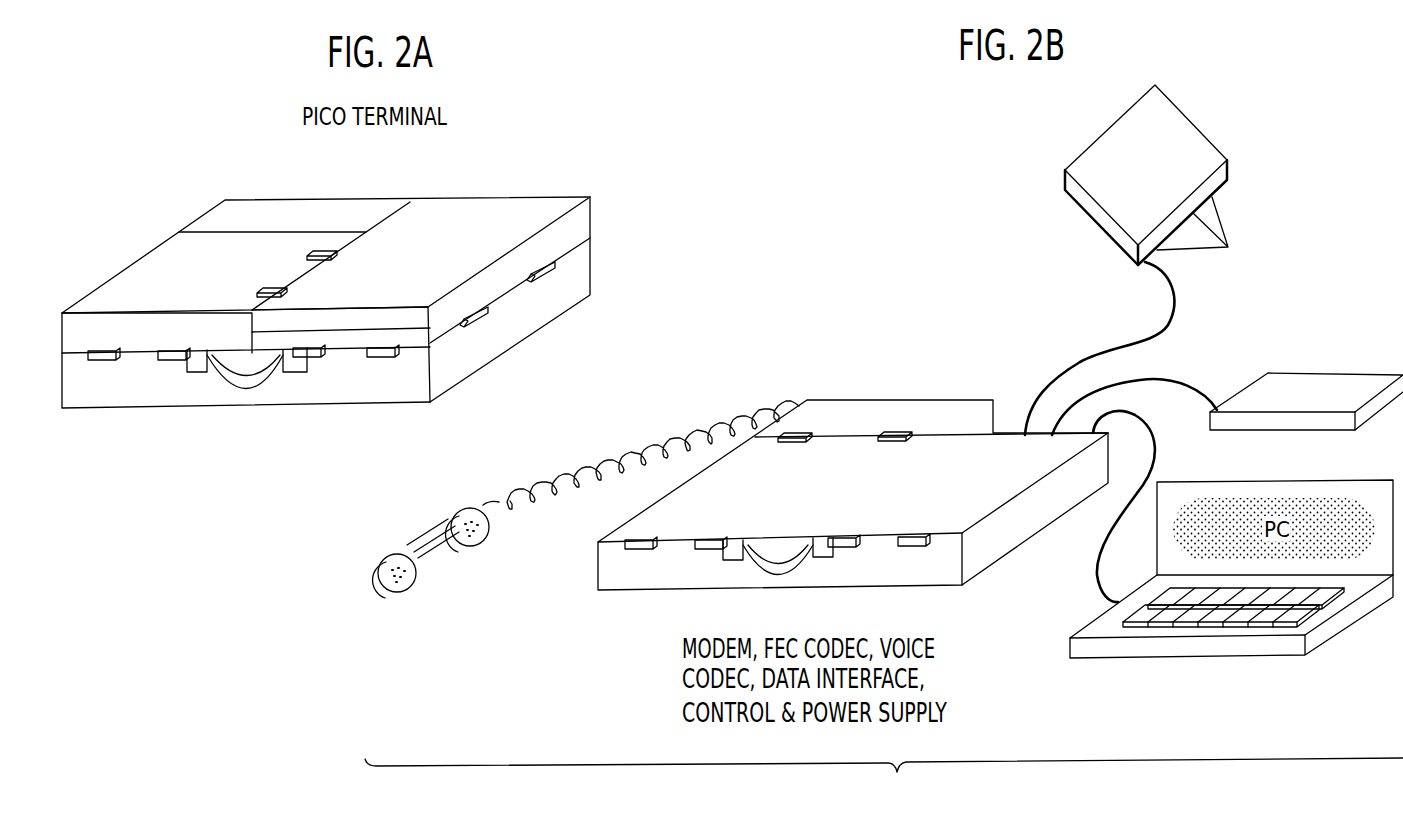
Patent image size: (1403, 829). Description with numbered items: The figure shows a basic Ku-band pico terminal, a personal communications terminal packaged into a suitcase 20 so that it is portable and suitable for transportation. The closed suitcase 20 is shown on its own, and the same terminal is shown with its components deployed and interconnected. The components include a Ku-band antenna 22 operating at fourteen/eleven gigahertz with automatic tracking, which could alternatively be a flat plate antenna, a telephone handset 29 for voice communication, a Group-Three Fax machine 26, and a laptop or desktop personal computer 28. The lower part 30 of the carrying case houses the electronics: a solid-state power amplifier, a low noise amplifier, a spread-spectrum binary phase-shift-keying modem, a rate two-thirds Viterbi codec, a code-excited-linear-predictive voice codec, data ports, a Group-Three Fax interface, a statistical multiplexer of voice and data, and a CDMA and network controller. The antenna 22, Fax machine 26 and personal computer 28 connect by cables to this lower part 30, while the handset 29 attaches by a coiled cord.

In FIG. 2A, the suitcase 20 is at (183, 440).
In FIG. 2A, the Ku-band antenna 22 is at (120, 278).
In FIG. 2B, the Ku-band antenna 22 is at (1198, 143).
In FIG. 2A, the Group-3 Fax machine 26 is at (305, 207).
In FIG. 2B, the Group-3 Fax machine 26 is at (1335, 378).
In FIG. 2A, the personal computer 28 is at (498, 208).
In FIG. 2B, the telephone handset 29 is at (412, 550).
In FIG. 2A, the lower part of the carrying case 30 is at (352, 397).
In FIG. 2B, the lower part of the carrying case 30 is at (598, 565).